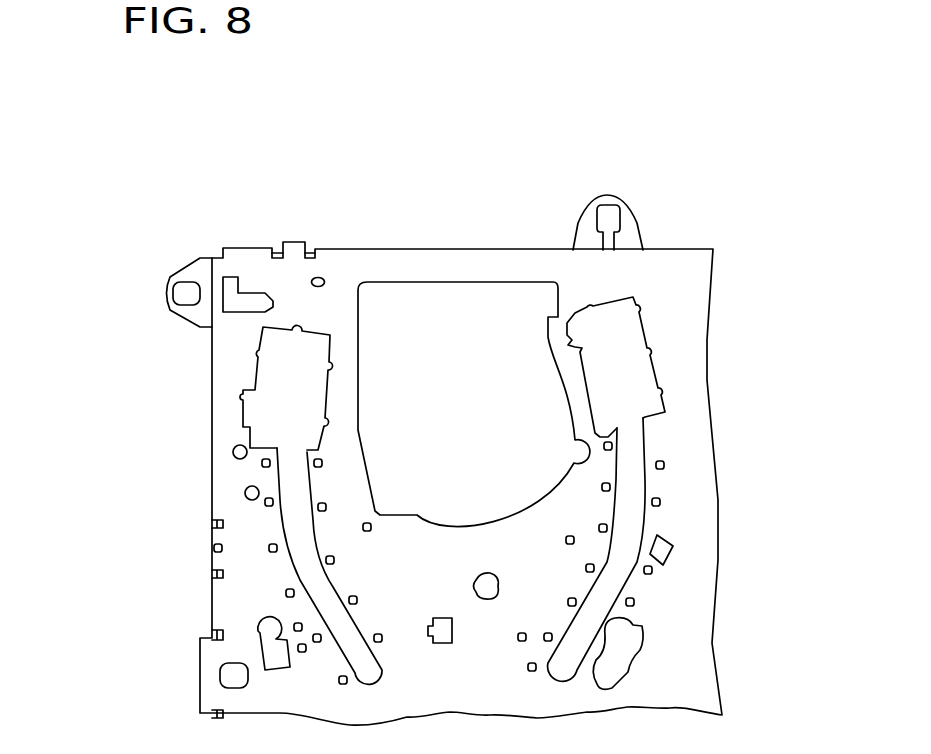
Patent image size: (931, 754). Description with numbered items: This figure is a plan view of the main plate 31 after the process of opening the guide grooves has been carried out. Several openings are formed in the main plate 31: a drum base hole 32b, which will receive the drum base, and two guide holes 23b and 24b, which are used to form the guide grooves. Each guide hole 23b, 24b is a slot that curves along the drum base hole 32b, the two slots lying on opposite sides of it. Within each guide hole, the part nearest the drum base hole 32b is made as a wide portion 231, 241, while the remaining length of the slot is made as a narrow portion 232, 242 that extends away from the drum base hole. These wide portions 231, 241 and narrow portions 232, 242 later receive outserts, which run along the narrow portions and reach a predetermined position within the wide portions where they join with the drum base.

The main plate 31 is at (385, 247).
The drum base hole 32b is at (500, 282).
The guide hole 23b is at (107, 356).
The wide portion 231 is at (255, 398).
The narrow portion 232 is at (287, 533).
The guide hole 24b is at (819, 337).
The wide portion 241 is at (643, 380).
The narrow portion 242 is at (637, 485).